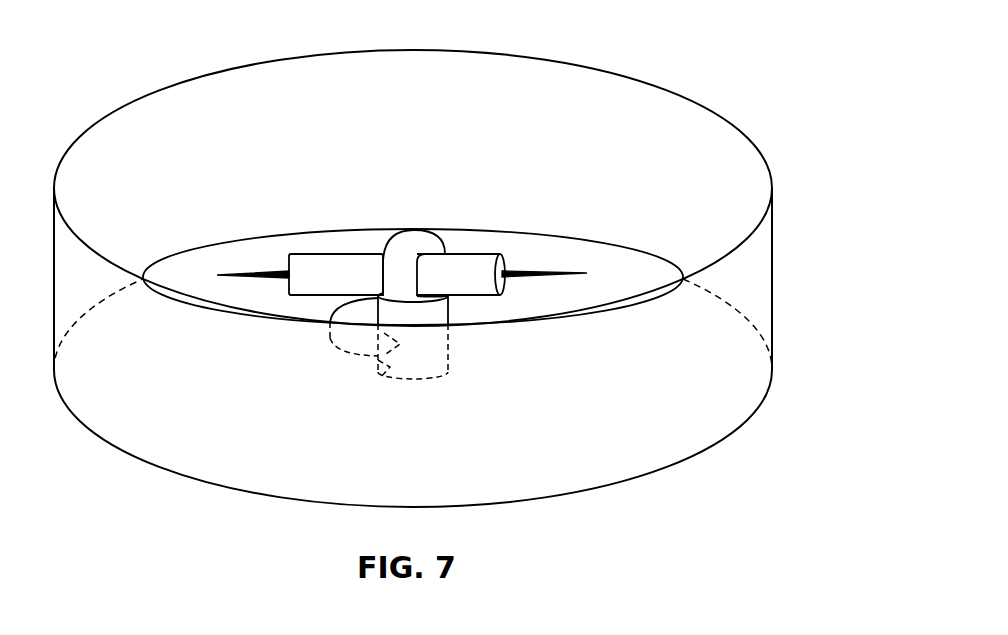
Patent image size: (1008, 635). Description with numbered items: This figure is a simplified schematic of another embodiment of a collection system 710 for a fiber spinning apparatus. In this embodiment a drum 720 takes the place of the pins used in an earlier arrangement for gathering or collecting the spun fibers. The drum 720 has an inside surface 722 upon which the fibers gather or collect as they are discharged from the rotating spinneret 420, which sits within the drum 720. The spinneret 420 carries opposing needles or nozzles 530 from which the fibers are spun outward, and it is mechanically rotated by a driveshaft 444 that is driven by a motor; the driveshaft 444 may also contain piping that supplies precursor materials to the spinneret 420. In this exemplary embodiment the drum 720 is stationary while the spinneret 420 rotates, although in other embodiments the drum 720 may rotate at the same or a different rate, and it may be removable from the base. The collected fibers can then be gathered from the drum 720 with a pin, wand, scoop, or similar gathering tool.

The collection system 710 is at (467, 254).
The drum 720 is at (775, 203).
The inside surface 722 is at (236, 188).
The spinneret 420 is at (335, 253).
The needles or nozzles 530 is at (537, 264).
The driveshaft 444 is at (412, 382).